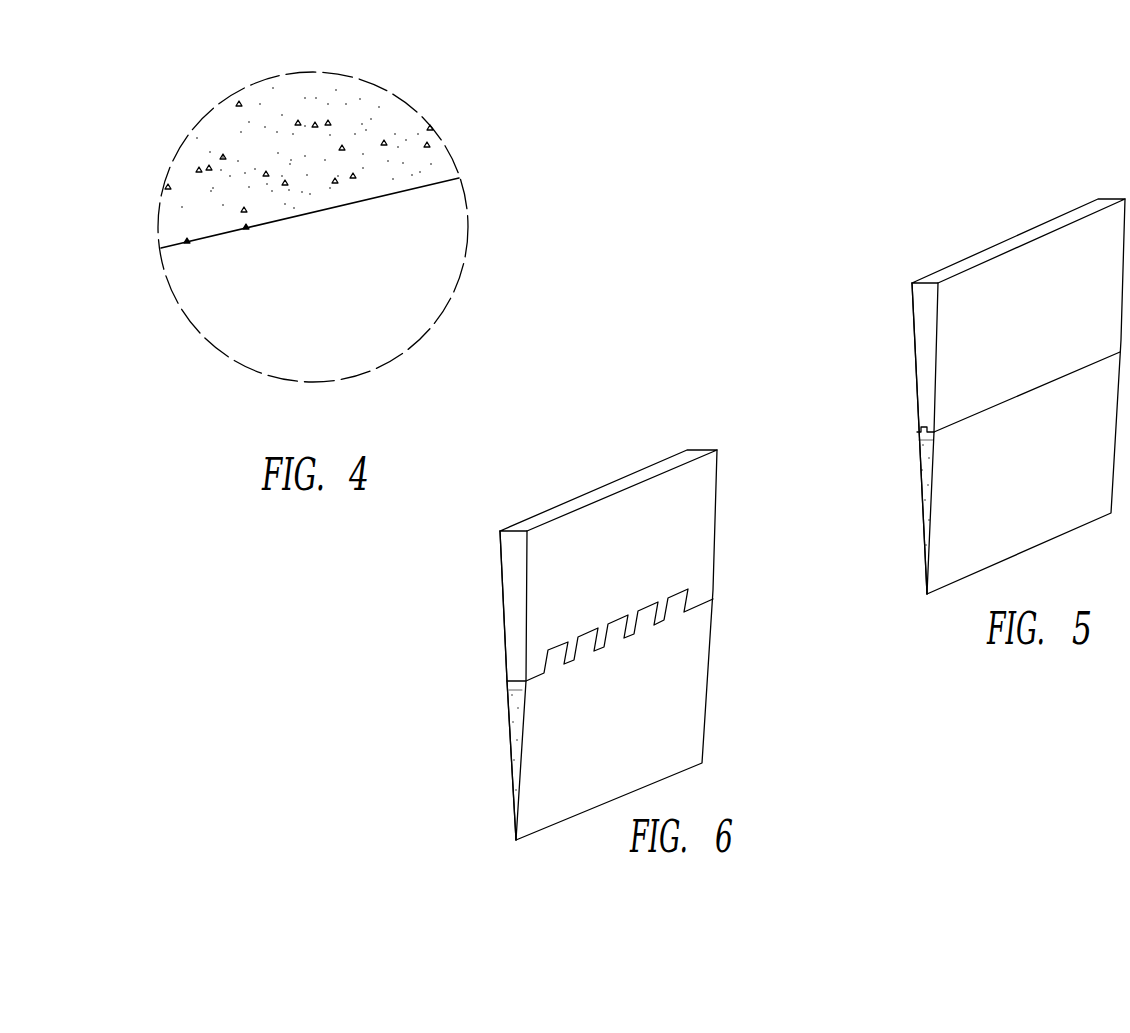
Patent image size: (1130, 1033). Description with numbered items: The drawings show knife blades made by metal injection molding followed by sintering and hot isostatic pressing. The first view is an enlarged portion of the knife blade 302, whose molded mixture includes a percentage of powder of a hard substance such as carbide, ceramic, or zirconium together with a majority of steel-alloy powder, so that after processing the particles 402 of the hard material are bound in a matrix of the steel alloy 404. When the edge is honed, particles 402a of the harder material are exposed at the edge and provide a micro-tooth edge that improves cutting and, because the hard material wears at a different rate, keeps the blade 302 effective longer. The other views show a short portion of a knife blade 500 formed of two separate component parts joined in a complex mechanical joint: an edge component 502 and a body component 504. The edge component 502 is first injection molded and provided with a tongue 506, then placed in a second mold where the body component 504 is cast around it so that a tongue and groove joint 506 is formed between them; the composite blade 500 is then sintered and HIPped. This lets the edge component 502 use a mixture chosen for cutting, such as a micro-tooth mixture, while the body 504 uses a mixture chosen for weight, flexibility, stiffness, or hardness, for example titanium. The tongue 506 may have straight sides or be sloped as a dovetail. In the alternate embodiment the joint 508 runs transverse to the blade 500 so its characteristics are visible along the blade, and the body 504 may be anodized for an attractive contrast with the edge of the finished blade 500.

In FIG. 4, the knife blade 302 is at (115, 90).
In FIG. 4, the particles of hard material 402 is at (298, 121).
In FIG. 4, the exposed particles of harder material 402a is at (187, 243).
In FIG. 4, the matrix of steel alloy 404 is at (414, 126).
In FIG. 5, the knife blade 500 is at (982, 181).
In FIG. 6, the knife blade 500 is at (605, 437).
In FIG. 5, the edge component 502 is at (927, 481).
In FIG. 6, the edge component 502 is at (643, 710).
In FIG. 5, the body component 504 is at (929, 328).
In FIG. 6, the body component 504 is at (566, 551).
In FIG. 5, the tongue 506 is at (926, 428).
In FIG. 5, the joint 508 is at (880, 486).
In FIG. 6, the joint 508 is at (737, 582).